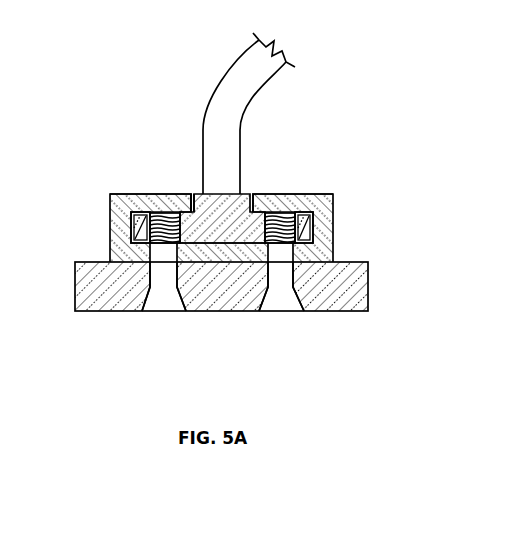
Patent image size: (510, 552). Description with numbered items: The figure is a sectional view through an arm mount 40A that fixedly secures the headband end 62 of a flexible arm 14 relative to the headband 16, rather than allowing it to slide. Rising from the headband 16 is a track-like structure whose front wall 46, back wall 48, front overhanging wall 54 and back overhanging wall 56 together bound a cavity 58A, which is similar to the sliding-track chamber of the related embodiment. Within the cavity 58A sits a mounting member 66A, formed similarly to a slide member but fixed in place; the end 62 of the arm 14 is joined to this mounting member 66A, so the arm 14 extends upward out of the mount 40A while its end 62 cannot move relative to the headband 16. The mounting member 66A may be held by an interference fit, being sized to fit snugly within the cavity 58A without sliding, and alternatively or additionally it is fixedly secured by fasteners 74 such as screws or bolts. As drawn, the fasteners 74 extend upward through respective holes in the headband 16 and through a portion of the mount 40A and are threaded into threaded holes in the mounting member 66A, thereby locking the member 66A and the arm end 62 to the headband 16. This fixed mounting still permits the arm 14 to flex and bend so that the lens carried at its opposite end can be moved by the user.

The arm 14 is at (211, 109).
The arm mount 40A is at (108, 179).
The front wall 46 is at (335, 228).
The back overhanging wall 56 is at (150, 195).
The front overhanging wall 54 is at (297, 196).
The first end of arm 62 is at (238, 184).
The mounting member 66A is at (193, 192).
The back wall 48 is at (112, 226).
The cavity 58A is at (313, 238).
The headband 16 is at (105, 312).
The fasteners 74 is at (160, 303).